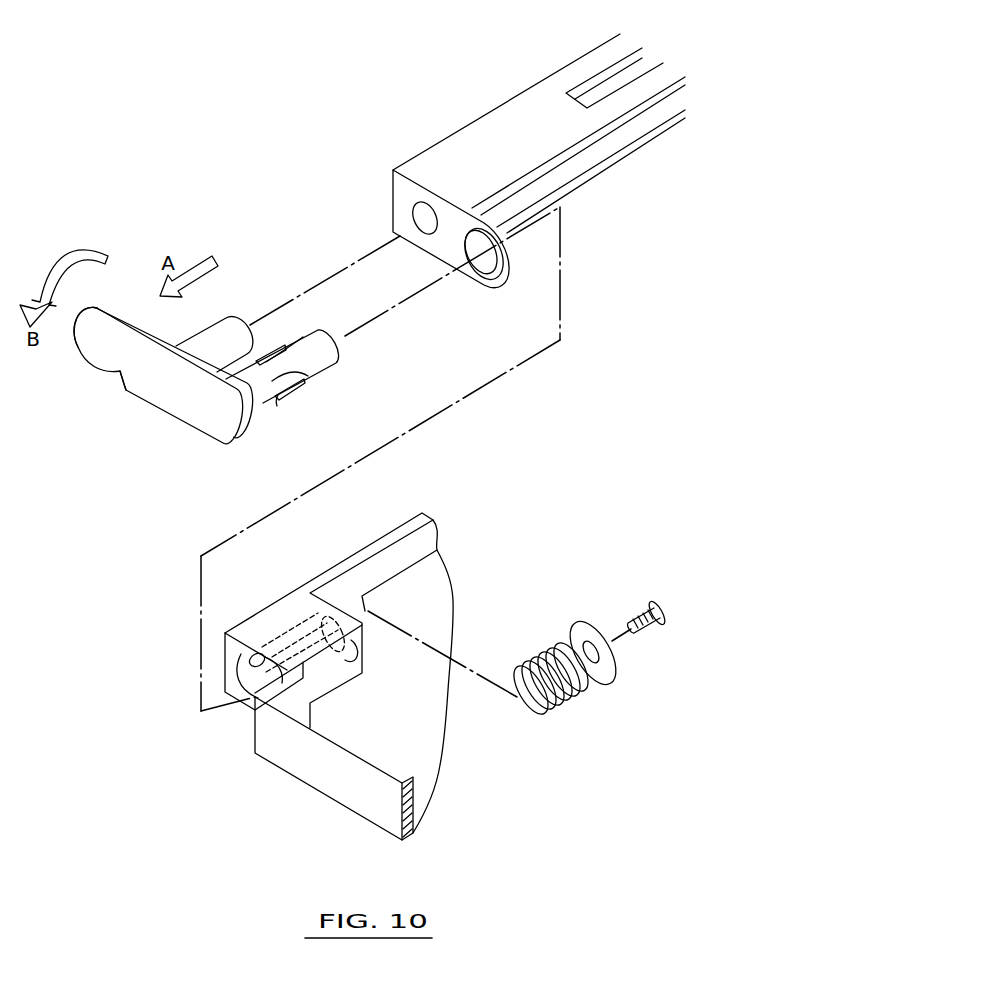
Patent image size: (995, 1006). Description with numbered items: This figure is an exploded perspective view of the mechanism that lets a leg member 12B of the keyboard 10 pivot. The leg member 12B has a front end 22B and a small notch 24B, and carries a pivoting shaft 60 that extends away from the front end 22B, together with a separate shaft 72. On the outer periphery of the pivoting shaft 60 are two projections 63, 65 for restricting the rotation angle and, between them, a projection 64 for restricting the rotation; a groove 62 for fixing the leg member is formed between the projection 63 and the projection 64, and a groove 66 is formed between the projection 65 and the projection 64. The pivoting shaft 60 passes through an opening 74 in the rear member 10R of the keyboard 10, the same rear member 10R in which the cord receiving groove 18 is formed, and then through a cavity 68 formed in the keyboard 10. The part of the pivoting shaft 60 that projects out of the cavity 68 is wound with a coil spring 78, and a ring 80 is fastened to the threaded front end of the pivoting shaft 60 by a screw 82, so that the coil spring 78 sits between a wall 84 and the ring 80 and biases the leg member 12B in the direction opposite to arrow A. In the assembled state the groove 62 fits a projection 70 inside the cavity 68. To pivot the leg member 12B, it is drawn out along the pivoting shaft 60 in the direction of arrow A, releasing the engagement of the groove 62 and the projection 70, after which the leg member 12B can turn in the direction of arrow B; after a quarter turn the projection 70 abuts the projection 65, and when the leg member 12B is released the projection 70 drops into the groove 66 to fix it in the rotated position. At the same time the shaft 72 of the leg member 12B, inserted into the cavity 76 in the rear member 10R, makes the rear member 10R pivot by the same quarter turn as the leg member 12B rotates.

The keyboard 10 is at (308, 767).
The rear member 10R is at (498, 122).
The leg member 12B is at (167, 403).
The groove 18 is at (597, 90).
The front end 22B is at (100, 350).
The notch of knob 24B is at (120, 377).
The pivoting shaft 60 is at (328, 360).
The groove 62 is at (262, 360).
The projection 63 is at (285, 345).
The projection 64 is at (306, 378).
The projection 65 is at (300, 397).
The groove 66 is at (278, 410).
The cavity 68 is at (255, 692).
The projection 70 is at (258, 666).
The shaft 72 is at (220, 327).
The opening 74 is at (486, 262).
The cavity 76 is at (422, 214).
The coil spring 78 is at (557, 700).
The ring 80 is at (607, 682).
The screw 82 is at (657, 627).
The wall 84 is at (350, 648).